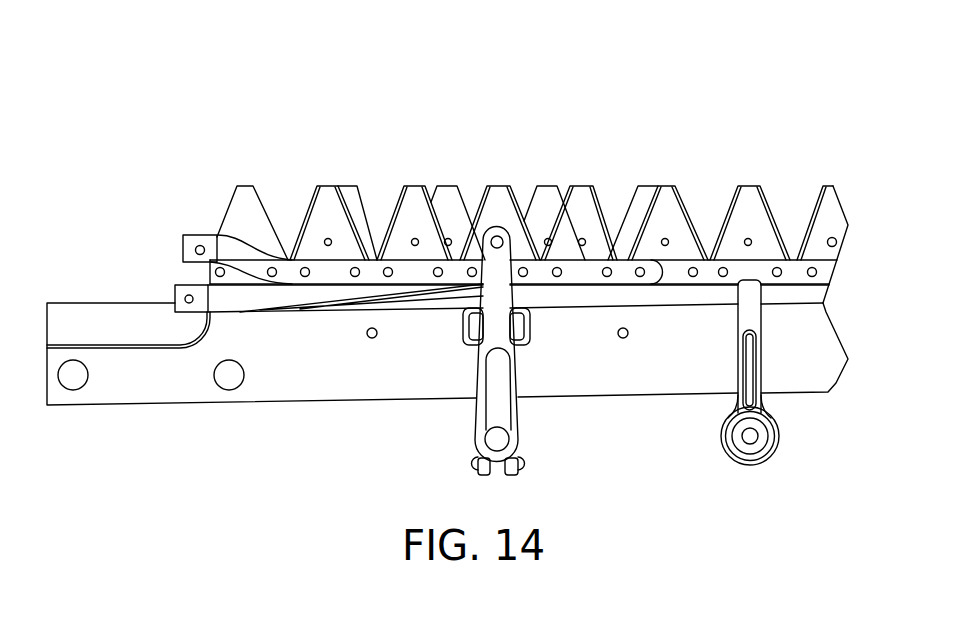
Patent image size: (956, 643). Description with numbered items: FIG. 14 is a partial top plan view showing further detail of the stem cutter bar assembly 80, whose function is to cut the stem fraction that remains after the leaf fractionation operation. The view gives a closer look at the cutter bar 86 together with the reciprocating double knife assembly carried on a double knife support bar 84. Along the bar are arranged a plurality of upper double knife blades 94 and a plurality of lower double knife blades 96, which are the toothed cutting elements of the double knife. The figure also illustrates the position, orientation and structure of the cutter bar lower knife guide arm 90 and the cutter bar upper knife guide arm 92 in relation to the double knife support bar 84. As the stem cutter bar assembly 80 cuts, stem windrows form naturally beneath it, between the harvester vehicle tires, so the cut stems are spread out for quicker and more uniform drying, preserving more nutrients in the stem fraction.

The stem cutter bar assembly 80 is at (175, 142).
The double knife support bar 84 is at (298, 375).
The cutter bar 86 is at (708, 178).
The cutter bar lower knife guide arm 90 is at (748, 360).
The cutter bar upper knife guide arm 92 is at (498, 367).
The upper double knife blades 94 is at (330, 222).
The lower double knife blades 96 is at (449, 208).